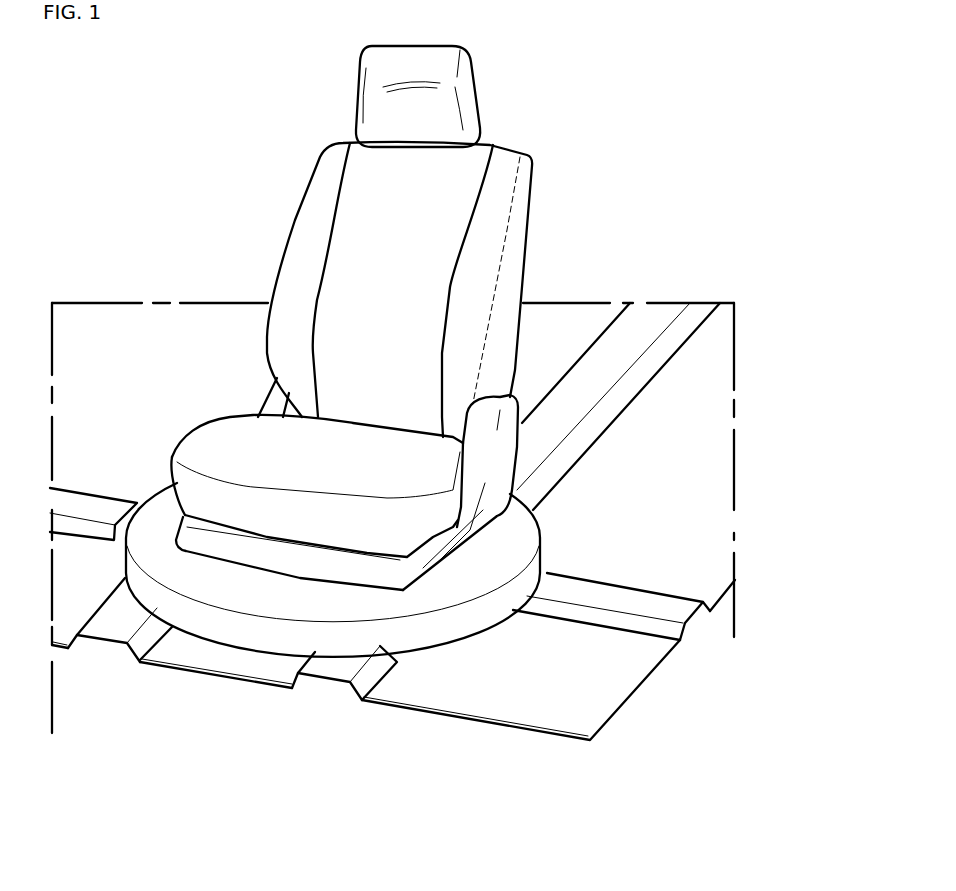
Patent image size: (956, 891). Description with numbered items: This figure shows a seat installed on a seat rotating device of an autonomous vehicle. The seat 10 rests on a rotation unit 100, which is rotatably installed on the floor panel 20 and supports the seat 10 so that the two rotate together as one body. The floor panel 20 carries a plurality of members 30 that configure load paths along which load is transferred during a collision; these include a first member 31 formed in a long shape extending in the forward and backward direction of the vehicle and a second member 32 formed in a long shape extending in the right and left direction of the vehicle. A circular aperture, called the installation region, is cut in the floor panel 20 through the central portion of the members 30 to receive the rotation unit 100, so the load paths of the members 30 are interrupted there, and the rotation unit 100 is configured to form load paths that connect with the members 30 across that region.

The seat 10 is at (517, 212).
The floor panel 20 is at (703, 420).
The member 30 is at (393, 697).
The first member 31 is at (643, 310).
The second member 32 is at (668, 607).
The rotation unit 100 is at (543, 537).